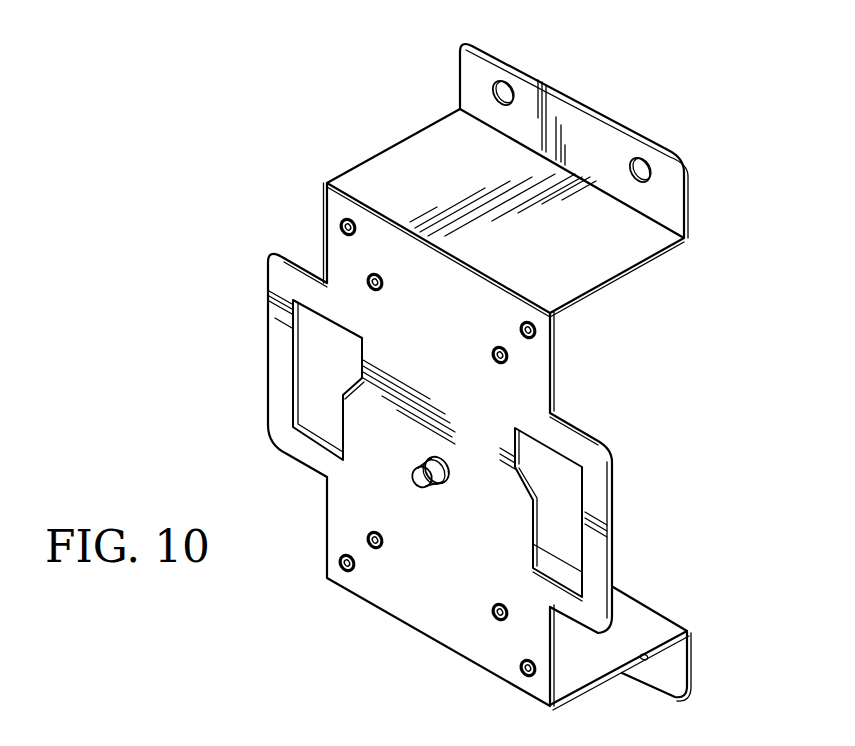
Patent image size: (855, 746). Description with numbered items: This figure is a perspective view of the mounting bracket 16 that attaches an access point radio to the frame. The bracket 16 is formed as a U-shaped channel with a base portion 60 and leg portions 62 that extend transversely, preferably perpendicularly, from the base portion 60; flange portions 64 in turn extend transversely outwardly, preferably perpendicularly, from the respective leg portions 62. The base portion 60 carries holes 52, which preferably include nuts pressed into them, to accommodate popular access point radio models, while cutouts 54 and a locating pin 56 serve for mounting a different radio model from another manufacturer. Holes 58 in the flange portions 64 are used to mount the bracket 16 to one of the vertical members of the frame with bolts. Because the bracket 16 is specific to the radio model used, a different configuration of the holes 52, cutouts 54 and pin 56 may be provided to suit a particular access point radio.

The mounting bracket 16 is at (375, 108).
The holes 52 is at (366, 281).
The cutouts 54 is at (288, 376).
The locating pin 56 is at (419, 487).
The holes 58 is at (507, 83).
The base portion 60 is at (503, 403).
The leg portions 62 is at (645, 234).
The flange portions 64 is at (674, 168).